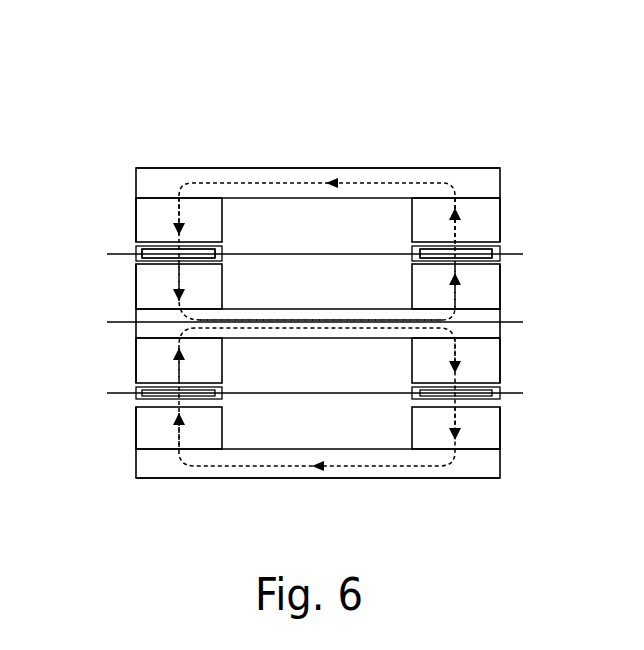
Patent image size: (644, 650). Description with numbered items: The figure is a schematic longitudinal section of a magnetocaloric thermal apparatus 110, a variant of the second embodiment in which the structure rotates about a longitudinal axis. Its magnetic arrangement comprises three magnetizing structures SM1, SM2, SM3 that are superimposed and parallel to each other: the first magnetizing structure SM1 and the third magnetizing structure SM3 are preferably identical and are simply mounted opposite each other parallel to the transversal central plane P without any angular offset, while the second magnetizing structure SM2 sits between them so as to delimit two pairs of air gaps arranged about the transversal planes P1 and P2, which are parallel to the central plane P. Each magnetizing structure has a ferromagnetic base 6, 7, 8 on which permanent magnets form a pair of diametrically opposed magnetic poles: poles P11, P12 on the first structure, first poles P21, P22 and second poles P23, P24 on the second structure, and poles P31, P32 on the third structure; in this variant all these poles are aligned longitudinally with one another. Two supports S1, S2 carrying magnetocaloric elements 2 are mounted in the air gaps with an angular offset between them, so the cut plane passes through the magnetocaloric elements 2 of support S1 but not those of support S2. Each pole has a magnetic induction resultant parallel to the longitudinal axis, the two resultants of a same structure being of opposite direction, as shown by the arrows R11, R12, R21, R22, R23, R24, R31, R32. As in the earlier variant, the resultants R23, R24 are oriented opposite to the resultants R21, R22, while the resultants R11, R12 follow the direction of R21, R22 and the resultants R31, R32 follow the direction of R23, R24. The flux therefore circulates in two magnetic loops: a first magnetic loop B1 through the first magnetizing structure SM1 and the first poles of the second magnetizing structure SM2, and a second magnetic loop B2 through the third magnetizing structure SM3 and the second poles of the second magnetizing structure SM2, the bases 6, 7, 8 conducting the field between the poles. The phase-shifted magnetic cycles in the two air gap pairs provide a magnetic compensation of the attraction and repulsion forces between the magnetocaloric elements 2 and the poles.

The magnetocaloric thermal apparatus 110 is at (432, 99).
The magnetocaloric element 2 is at (198, 248).
The base 6 is at (353, 168).
The base 7 is at (463, 317).
The base 8 is at (408, 478).
The first magnetic loop B1 is at (253, 168).
The second magnetic loop B2 is at (352, 478).
The first magnetizing structure SM1 is at (530, 200).
The second magnetizing structure SM2 is at (531, 334).
The third magnetizing structure SM3 is at (522, 458).
The transversal central plane P is at (108, 321).
The transversal plane P1 is at (110, 253).
The transversal plane P2 is at (108, 393).
The first support S1 is at (137, 248).
The second support S2 is at (134, 389).
The magnetic pole P11 is at (145, 218).
The magnetic pole P12 is at (488, 236).
The first magnetic pole P21 is at (145, 288).
The first magnetic pole P22 is at (483, 283).
The second magnetic pole P23 is at (152, 367).
The second magnetic pole P24 is at (482, 365).
The magnetic pole P31 is at (150, 435).
The magnetic pole P32 is at (482, 430).
The magnetic induction resultant R11 is at (183, 213).
The magnetic induction resultant R12 is at (452, 226).
The magnetic induction resultant R21 is at (183, 283).
The magnetic induction resultant R22 is at (452, 303).
The magnetic induction resultant R23 is at (183, 367).
The magnetic induction resultant R24 is at (452, 358).
The magnetic induction resultant R31 is at (183, 428).
The magnetic induction resultant R32 is at (452, 423).